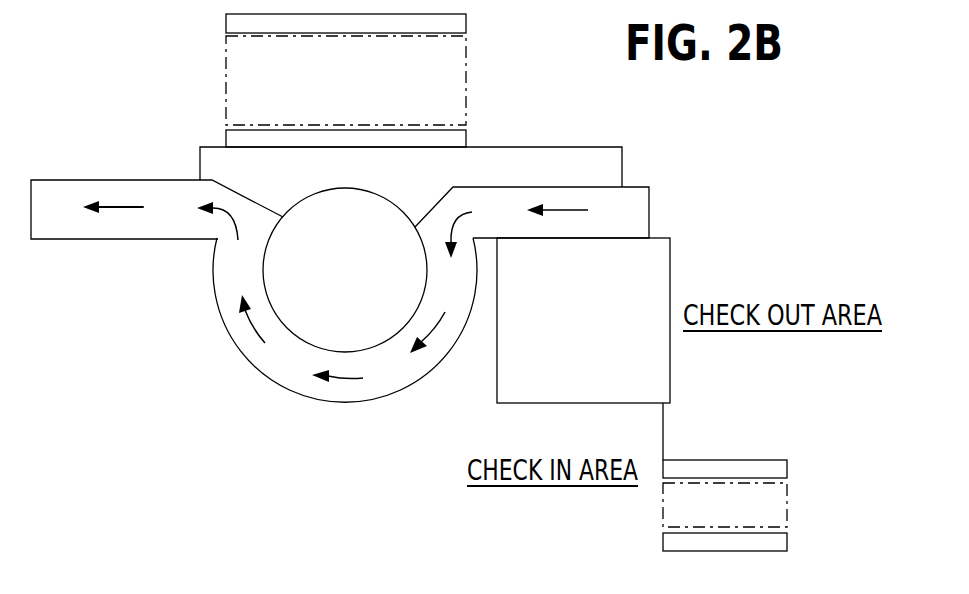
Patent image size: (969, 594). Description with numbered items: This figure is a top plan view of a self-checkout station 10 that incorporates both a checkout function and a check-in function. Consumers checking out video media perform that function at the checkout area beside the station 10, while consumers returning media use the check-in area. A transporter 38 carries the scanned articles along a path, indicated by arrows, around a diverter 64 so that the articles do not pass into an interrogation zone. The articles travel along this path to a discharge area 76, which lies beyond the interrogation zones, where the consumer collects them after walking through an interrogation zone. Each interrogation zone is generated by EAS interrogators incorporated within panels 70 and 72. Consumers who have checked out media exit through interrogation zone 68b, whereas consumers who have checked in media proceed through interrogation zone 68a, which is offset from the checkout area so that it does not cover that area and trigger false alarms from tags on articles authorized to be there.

The station 10 is at (568, 327).
The transporter 38 is at (650, 216).
The diverter 64 is at (333, 286).
The interrogation zone 68a is at (787, 503).
The interrogation zone 68b is at (226, 73).
The panel 70 is at (226, 138).
The panel 72 is at (226, 22).
The discharge area 76 is at (88, 180).